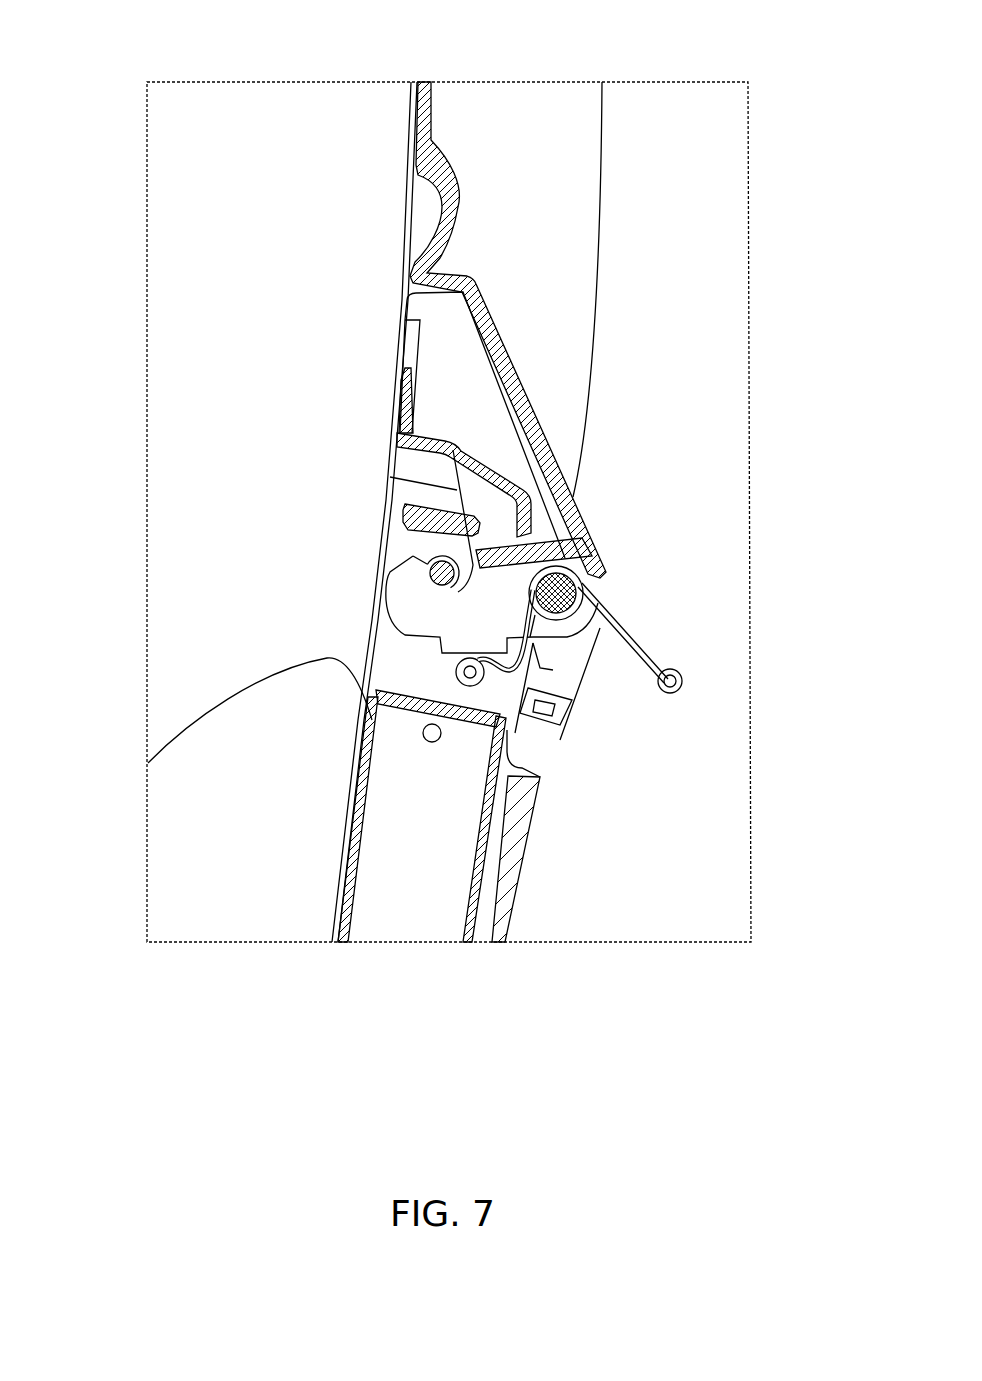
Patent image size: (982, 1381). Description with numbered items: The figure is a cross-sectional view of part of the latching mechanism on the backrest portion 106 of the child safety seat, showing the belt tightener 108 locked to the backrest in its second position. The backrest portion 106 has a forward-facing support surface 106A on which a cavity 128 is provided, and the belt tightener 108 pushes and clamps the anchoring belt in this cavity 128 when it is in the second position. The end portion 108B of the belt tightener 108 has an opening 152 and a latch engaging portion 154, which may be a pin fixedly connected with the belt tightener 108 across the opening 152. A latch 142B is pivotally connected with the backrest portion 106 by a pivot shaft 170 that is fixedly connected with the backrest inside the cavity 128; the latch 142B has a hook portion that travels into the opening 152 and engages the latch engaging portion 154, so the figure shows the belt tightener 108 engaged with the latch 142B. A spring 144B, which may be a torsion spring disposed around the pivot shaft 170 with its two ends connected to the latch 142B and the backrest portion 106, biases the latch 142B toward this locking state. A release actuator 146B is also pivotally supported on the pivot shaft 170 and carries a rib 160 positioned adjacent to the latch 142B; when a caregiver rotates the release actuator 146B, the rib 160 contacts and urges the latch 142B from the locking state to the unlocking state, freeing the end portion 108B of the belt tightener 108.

The backrest portion 106 is at (718, 124).
The support surface 106A is at (412, 113).
The release actuator 146B is at (402, 387).
The cavity 128 is at (425, 468).
The rib 160 is at (517, 540).
The latch engaging portion 154 is at (433, 565).
The latch 142B is at (407, 609).
The opening 152 is at (398, 660).
The pivot shaft 170 is at (580, 590).
The spring 144B is at (682, 678).
The end portion 108B is at (358, 745).
The belt tightener 108 is at (480, 907).